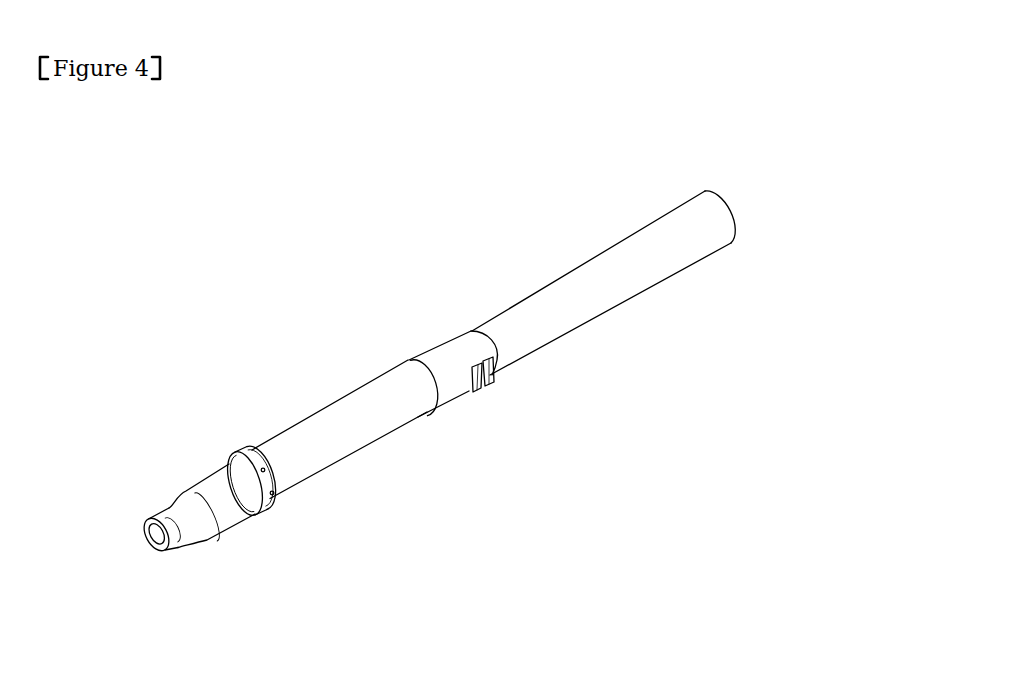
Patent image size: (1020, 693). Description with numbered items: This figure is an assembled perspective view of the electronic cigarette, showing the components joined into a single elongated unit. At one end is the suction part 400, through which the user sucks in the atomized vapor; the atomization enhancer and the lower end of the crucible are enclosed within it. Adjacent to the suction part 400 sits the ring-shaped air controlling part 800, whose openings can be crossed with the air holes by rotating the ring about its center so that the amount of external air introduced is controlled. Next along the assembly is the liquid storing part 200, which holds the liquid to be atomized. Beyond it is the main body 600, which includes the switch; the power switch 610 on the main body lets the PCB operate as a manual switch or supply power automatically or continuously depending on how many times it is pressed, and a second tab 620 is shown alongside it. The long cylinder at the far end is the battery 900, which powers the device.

The liquid storing part 200 is at (362, 449).
The suction part 400 is at (212, 541).
The main body 600 is at (447, 403).
The power switch 610 is at (473, 392).
The second tab 620 is at (490, 386).
The air controlling part 800 is at (270, 513).
The battery 900 is at (631, 287).